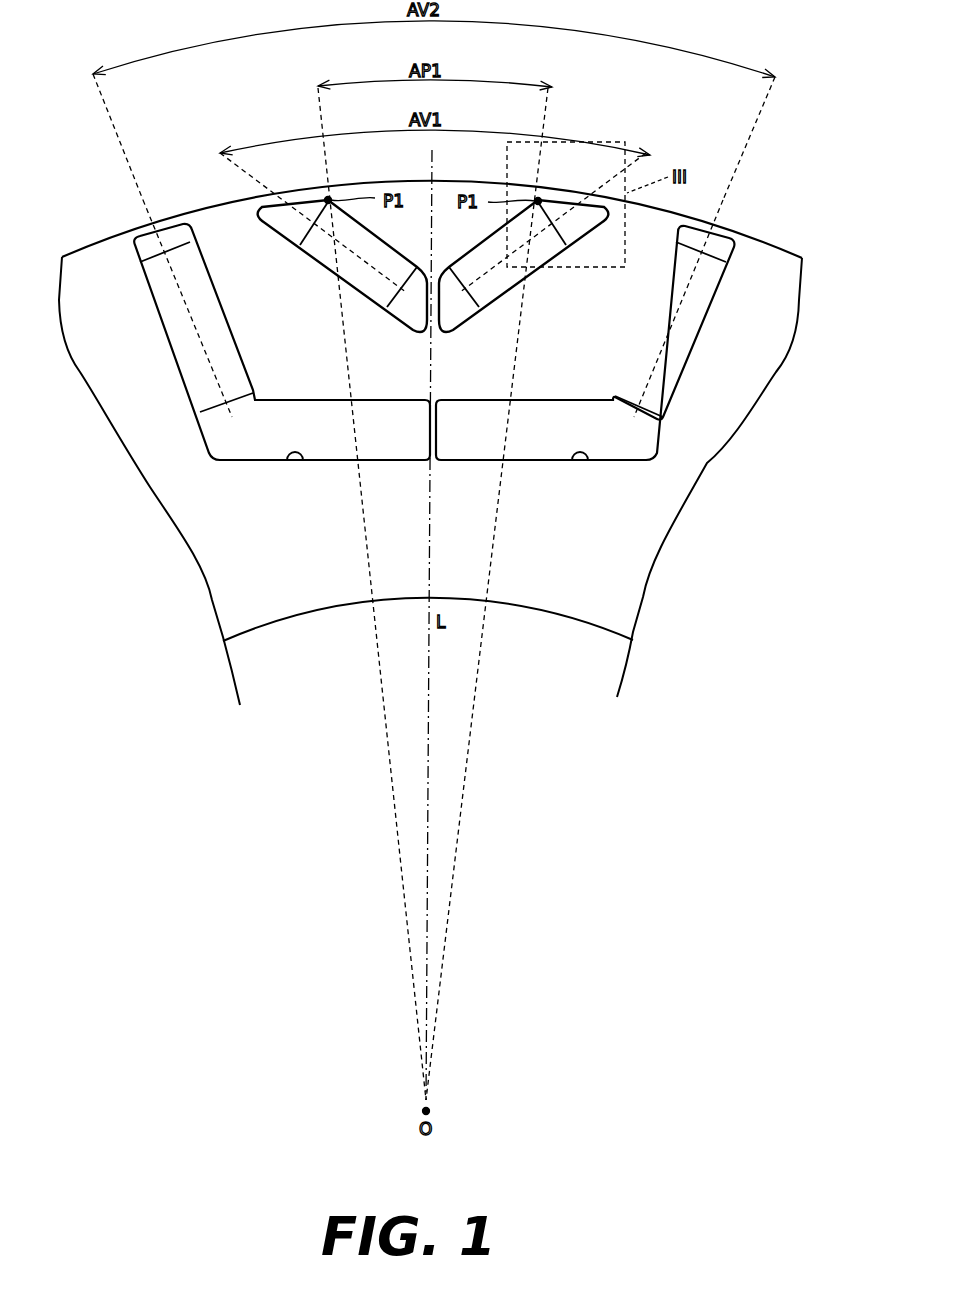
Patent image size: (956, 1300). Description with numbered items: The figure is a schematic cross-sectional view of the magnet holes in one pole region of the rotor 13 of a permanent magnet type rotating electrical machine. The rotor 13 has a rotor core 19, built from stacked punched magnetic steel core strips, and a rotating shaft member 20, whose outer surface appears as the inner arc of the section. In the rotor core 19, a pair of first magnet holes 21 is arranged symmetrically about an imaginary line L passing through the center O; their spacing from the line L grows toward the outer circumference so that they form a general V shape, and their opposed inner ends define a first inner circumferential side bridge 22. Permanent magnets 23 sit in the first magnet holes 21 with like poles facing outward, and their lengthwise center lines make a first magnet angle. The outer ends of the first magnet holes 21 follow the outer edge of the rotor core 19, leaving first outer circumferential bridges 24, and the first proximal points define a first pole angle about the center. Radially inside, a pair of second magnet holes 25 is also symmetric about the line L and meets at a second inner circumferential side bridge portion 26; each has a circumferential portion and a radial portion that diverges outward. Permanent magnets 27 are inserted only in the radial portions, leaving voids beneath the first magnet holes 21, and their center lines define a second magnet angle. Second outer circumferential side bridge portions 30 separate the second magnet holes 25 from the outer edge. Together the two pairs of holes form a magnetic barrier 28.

The rotor 13 is at (768, 222).
The rotor core 19 is at (683, 468).
The rotating shaft member 20 is at (573, 643).
The first magnet holes 21 is at (263, 216).
The first inner circumferential side bridge 22 is at (428, 344).
The permanent magnets 23 is at (320, 262).
The first outer circumferential bridges 24 is at (300, 199).
The second magnet holes 25 is at (293, 461).
The second inner circumferential side bridge portion 26 is at (441, 464).
The permanent magnets 27 is at (187, 322).
The magnetic barrier 28 is at (334, 478).
The second outer circumferential side bridge portions 30 is at (166, 222).